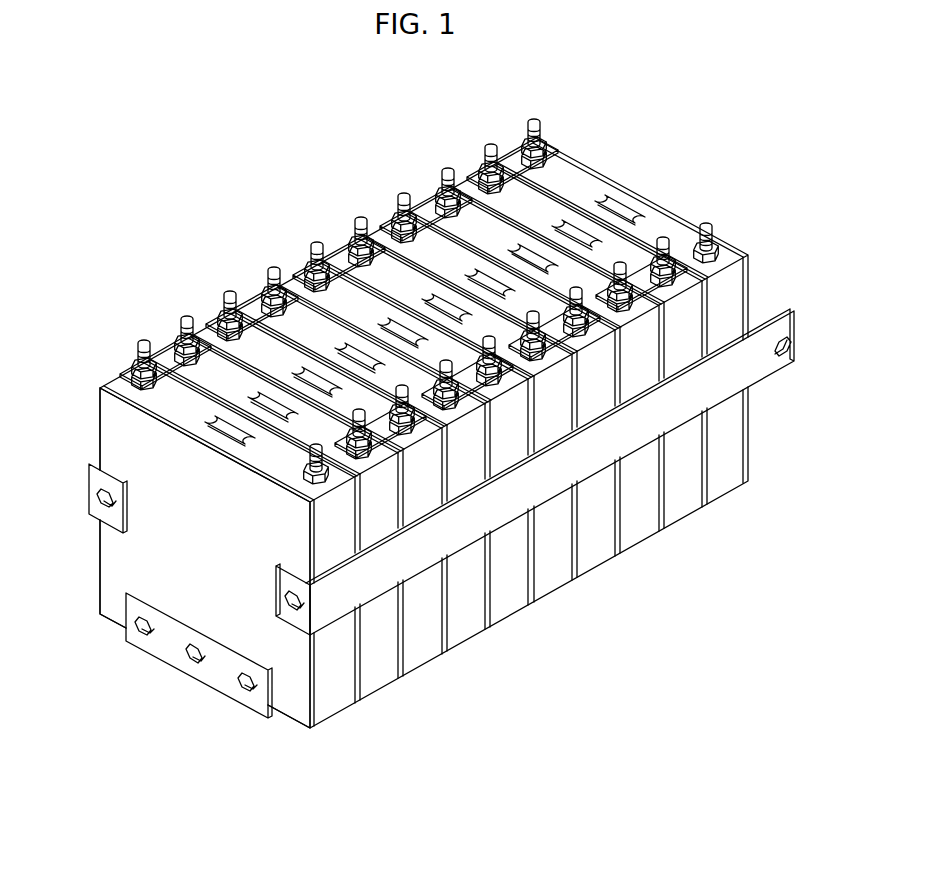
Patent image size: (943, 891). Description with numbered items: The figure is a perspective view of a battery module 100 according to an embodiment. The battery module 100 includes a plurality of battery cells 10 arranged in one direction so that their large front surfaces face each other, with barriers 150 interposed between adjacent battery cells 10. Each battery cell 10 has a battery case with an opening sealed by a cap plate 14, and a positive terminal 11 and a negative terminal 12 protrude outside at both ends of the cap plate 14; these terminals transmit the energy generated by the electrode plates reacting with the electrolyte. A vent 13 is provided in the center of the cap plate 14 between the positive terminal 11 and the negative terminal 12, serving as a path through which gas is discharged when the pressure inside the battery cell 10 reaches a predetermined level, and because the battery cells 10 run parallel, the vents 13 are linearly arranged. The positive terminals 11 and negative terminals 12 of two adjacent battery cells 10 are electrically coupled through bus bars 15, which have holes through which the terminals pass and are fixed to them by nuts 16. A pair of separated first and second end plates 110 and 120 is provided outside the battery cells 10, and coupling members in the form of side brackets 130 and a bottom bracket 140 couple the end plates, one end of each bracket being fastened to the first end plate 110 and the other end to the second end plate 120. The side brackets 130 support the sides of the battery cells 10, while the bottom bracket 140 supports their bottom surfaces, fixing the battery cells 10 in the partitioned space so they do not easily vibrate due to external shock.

The battery module 100 is at (162, 199).
The battery cell 10 is at (694, 449).
The positive terminal 11 is at (542, 131).
The negative terminal 12 is at (703, 227).
The vent 13 is at (626, 209).
The cap plate 14 is at (585, 181).
The bus bar 15 is at (172, 363).
The nut 16 is at (223, 322).
The first end plate 110 is at (117, 564).
The second end plate 120 is at (761, 423).
The side bracket 130 is at (84, 489).
The bottom bracket 140 is at (171, 647).
The barrier 150 is at (540, 573).